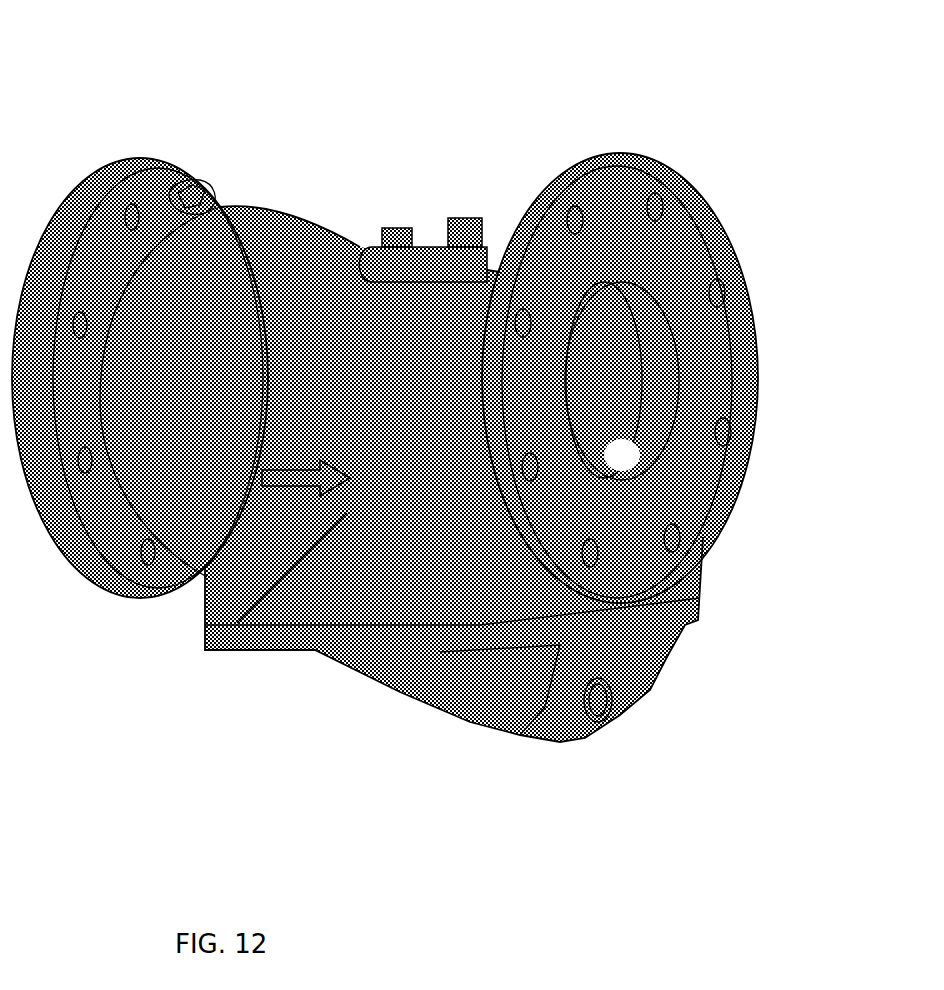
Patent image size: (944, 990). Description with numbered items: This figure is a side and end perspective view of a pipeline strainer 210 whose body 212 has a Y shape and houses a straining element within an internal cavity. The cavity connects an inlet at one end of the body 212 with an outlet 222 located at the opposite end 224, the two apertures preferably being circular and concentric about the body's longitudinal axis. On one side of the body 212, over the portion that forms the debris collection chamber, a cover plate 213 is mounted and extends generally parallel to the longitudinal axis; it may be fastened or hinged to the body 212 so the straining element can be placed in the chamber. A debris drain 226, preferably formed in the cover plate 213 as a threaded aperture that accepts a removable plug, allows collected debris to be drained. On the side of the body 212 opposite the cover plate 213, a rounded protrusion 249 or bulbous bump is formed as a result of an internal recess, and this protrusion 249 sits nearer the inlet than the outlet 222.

The pipeline strainer 210 is at (368, 108).
The rounded protrusion 249 is at (285, 228).
The outlet 222 is at (655, 381).
The end of the body 224 is at (700, 480).
The body 212 is at (218, 645).
The cover plate 213 is at (458, 680).
The debris drain 226 is at (607, 730).